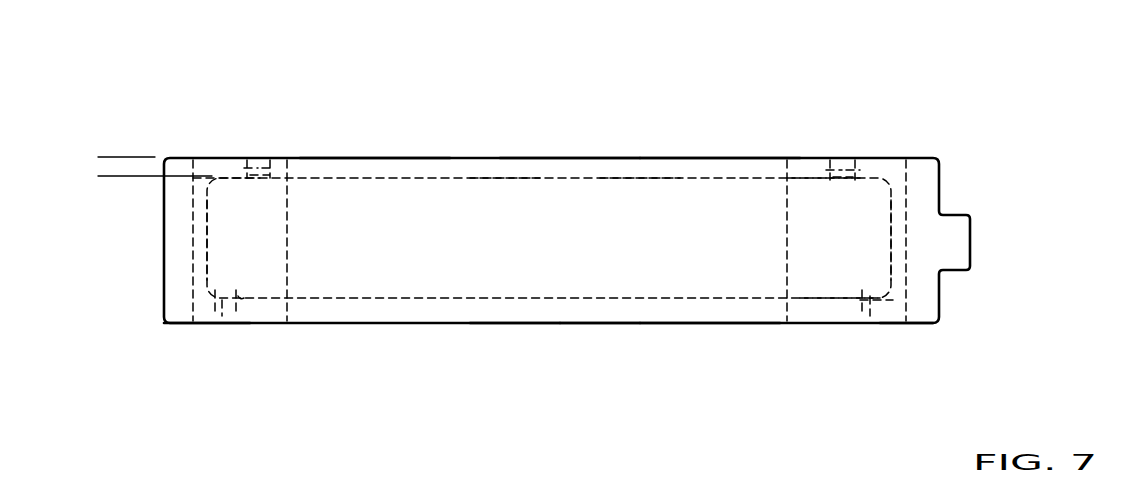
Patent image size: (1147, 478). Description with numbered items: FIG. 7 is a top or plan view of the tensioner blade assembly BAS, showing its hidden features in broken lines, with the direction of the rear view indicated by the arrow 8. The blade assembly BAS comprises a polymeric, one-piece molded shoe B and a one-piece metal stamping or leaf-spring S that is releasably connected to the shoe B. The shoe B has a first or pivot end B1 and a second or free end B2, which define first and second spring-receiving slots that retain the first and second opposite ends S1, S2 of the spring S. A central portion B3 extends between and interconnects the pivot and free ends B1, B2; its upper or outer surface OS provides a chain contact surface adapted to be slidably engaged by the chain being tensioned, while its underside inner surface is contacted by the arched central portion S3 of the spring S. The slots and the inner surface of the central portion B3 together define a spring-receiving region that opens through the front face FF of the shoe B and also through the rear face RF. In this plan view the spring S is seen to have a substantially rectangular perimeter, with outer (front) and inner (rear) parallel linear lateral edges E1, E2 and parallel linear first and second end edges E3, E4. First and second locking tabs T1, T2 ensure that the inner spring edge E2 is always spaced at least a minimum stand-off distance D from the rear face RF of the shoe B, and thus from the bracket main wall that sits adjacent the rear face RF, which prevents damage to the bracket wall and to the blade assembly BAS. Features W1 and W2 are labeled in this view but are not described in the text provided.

The viewing direction of FIG. 8 is at (569, 110).
The minimum stand-off distance D is at (113, 215).
The first locking tab T1 is at (843, 160).
The second locking tab T2 is at (247, 160).
The first end of the spring S1 is at (822, 232).
The second end of the spring S2 is at (237, 227).
The arched central portion of the spring S3 is at (628, 178).
The spring S is at (423, 275).
The outer lateral edge E1 is at (835, 323).
The inner lateral edge E2 is at (505, 178).
The first end edge E3 is at (893, 212).
The second end edge E4 is at (207, 228).
The first wall W1 is at (890, 333).
The second wall W2 is at (258, 323).
The shoe B is at (512, 313).
The first or pivot end B1 is at (922, 325).
The second or free end B2 is at (175, 322).
The central portion B3 is at (580, 313).
The rear face RF is at (367, 157).
The front face FF is at (705, 323).
The outer surface OS is at (700, 235).
The tensioner blade assembly BAS is at (303, 352).